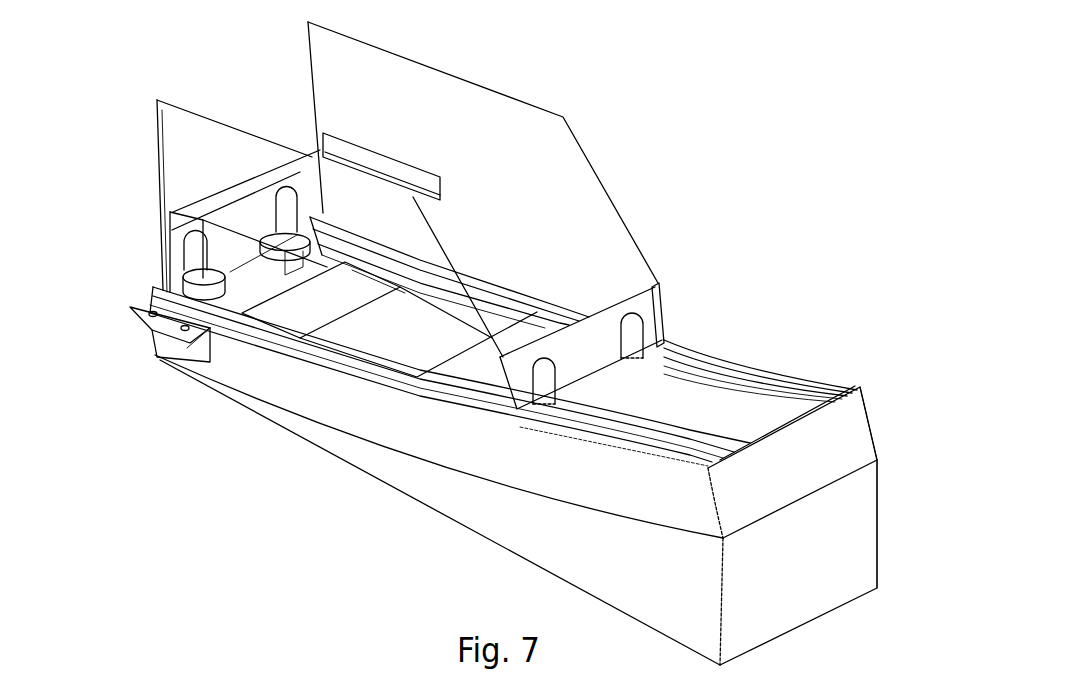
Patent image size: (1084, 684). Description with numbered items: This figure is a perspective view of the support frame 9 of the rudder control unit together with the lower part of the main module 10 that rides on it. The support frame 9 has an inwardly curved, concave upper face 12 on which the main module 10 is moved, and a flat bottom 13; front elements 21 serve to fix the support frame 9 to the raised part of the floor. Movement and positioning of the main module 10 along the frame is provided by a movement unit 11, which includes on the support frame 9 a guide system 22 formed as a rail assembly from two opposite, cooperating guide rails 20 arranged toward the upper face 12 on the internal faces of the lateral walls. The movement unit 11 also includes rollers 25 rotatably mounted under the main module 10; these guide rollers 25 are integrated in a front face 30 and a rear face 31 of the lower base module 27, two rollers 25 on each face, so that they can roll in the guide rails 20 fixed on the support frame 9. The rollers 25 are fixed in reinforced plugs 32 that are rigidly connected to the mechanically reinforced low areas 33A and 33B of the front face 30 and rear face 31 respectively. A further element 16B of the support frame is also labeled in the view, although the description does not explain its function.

The support frame 9 is at (881, 376).
The main module 10 is at (185, 186).
The movement unit 11 is at (407, 215).
The upper face 12 is at (748, 373).
The flat bottom 13 is at (494, 558).
The end wall 16B is at (890, 424).
The guide rails 20 is at (323, 232).
The front elements 21 is at (150, 333).
The guide system 22 is at (138, 210).
The rollers 25 is at (197, 295).
The lower base module 27 is at (475, 189).
The front face 30 is at (112, 236).
The rear face 31 is at (676, 280).
The reinforced plugs 32 is at (198, 253).
The low area 33A is at (168, 245).
The low area 33B is at (662, 312).